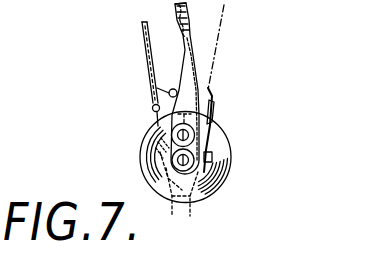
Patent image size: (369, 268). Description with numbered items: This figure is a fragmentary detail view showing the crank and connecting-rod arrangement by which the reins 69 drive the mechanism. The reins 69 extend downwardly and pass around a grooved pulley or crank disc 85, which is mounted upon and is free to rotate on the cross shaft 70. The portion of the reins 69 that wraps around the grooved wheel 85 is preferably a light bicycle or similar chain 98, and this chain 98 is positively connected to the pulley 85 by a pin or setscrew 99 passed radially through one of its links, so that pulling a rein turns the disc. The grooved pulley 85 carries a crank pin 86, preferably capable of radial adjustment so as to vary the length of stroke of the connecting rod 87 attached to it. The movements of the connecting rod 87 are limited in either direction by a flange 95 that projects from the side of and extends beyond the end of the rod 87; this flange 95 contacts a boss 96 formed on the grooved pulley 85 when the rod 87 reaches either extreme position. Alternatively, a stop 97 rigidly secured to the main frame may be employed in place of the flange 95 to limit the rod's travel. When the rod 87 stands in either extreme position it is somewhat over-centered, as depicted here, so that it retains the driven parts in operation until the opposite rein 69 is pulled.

The reins 69 is at (177, 8).
The stop 97 is at (150, 82).
The crank pin 86 is at (152, 130).
The cross shaft 70 is at (148, 152).
The boss 96 is at (172, 166).
The connecting rod 87 is at (197, 49).
The chain 98 is at (208, 82).
The flange 95 is at (212, 129).
The pin or setscrew 99 is at (213, 157).
The grooved pulley or crank disc 85 is at (229, 174).